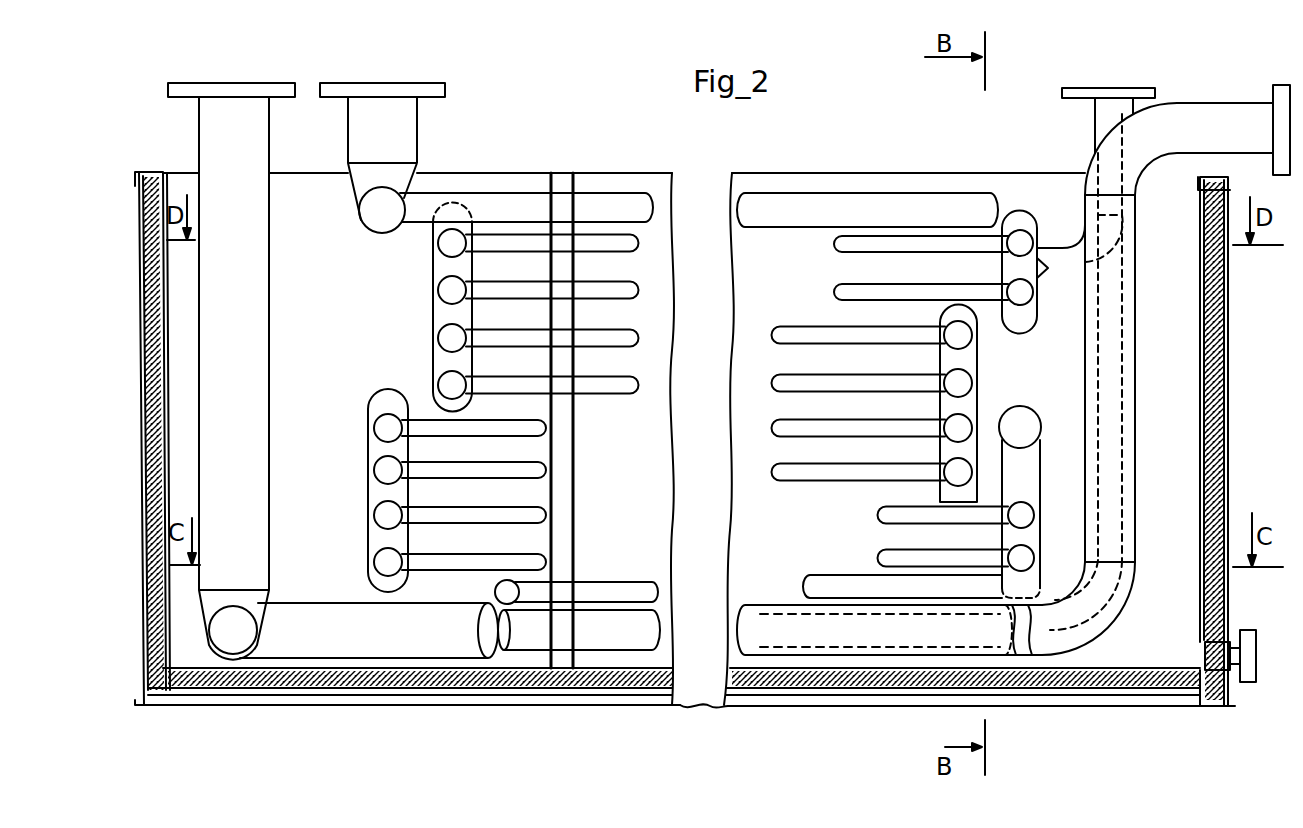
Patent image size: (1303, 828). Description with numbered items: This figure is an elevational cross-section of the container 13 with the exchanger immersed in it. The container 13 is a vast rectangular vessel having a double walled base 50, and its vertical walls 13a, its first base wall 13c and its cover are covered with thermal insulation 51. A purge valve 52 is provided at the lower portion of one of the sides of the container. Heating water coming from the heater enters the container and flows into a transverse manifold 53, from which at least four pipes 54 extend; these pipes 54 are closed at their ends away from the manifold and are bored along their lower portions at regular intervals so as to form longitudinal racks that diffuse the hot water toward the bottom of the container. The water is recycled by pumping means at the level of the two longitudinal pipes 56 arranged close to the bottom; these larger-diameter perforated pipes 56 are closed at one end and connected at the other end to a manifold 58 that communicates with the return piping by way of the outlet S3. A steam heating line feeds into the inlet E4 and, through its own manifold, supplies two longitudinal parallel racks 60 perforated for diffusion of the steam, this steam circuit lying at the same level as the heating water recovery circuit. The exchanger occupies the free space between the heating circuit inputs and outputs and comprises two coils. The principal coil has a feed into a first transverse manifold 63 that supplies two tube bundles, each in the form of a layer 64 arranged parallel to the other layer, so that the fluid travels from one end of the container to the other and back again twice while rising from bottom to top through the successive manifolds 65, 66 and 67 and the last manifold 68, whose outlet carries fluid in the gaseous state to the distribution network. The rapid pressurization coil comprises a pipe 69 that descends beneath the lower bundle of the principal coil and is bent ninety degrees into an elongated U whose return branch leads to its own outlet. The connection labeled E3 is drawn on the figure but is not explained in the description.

The container 13 is at (624, 440).
The vertical walls 13a is at (152, 172).
The first base wall 13c is at (1172, 668).
The double walled base 50 is at (355, 692).
The thermal insulation 51 is at (893, 690).
The purge valve 52 is at (1245, 672).
The transverse manifold 53 is at (388, 212).
The pipes 54 is at (600, 205).
The longitudinal pipes 56 is at (435, 630).
The manifold 58 is at (233, 632).
The longitudinal parallel racks 60 is at (612, 632).
The first transverse manifold 63 is at (1020, 458).
The layer 64 is at (614, 340).
The manifold 65 is at (378, 497).
The manifold 66 is at (985, 396).
The manifold 67 is at (440, 315).
The last manifold 68 is at (1018, 230).
The pipe 69 is at (606, 582).
The outlet S3 is at (231, 358).
The inlet E3 is at (382, 138).
The inlet E4 is at (1013, 370).